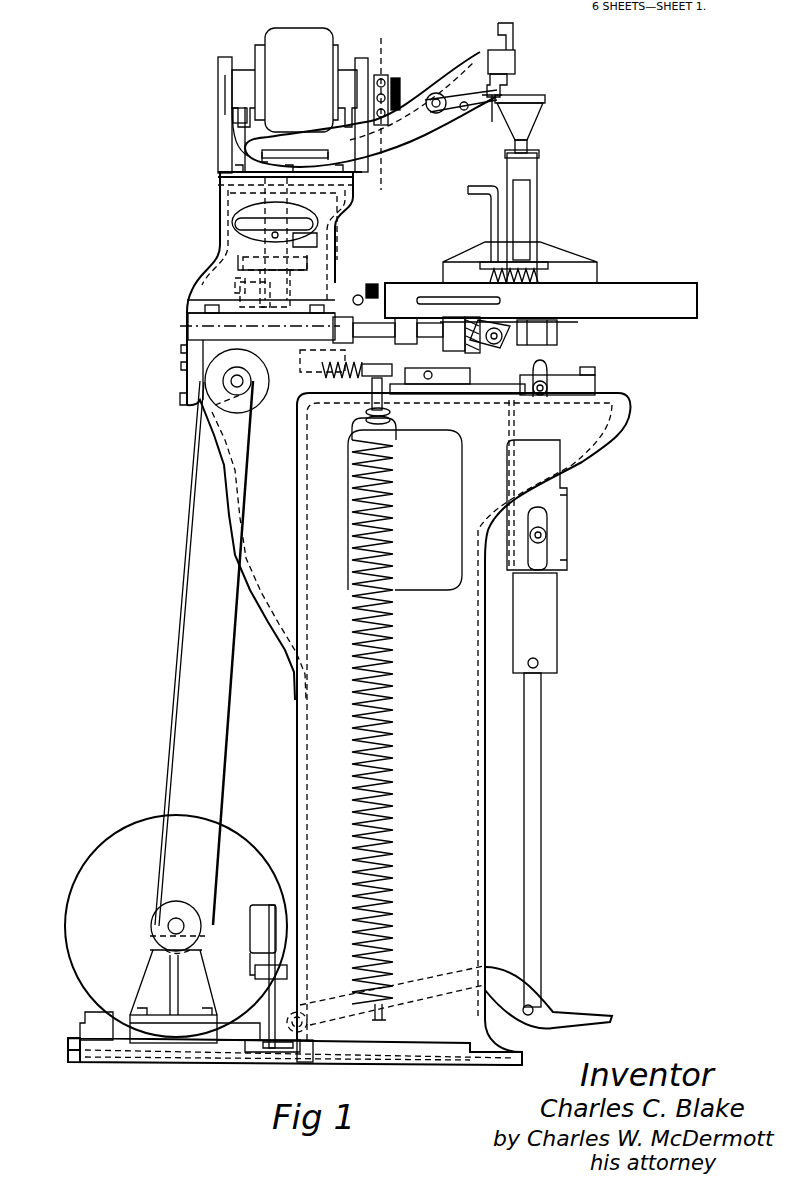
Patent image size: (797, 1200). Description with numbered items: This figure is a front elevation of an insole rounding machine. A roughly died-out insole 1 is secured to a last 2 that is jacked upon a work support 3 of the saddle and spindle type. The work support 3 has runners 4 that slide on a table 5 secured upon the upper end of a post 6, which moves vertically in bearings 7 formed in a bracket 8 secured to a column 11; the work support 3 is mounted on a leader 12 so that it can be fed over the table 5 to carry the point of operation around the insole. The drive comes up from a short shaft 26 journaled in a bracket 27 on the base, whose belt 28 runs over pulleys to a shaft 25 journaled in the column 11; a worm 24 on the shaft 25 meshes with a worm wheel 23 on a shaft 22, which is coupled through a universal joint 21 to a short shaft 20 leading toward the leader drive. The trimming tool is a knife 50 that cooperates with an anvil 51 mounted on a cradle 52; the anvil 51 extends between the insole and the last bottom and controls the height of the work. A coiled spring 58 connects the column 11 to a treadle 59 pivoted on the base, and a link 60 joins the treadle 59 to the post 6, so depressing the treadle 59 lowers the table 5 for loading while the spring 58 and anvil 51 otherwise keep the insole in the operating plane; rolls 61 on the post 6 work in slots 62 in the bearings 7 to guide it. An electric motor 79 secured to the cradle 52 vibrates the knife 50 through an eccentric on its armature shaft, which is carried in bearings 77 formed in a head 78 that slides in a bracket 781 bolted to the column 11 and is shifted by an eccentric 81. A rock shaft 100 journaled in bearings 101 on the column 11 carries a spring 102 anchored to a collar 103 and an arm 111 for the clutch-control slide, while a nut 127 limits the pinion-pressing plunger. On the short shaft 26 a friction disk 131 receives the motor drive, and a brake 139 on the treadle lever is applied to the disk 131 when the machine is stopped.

The insole 1 is at (530, 99).
The last 2 is at (530, 116).
The work support 3 is at (561, 198).
The runners 4 is at (599, 281).
The table 5 is at (698, 303).
The post 6 is at (558, 333).
The bearings 7 is at (522, 378).
The bracket 8 is at (353, 257).
The column 11 is at (467, 738).
The leader 12 is at (545, 279).
The short shaft 20 is at (352, 292).
The universal joint 21 is at (341, 300).
The shaft 22 is at (188, 326).
The worm wheel 23 is at (240, 293).
The worm 24 is at (215, 405).
The shaft 25 is at (230, 379).
The short shaft 26 is at (168, 924).
The bracket 27 is at (135, 985).
The belt 28 is at (165, 712).
The knife 50 is at (479, 94).
The anvil 51 is at (490, 100).
The cradle 52 is at (410, 138).
The coiled spring 58 is at (395, 510).
The treadle 59 is at (553, 1015).
The link 60 is at (541, 878).
The rolls 61 is at (547, 386).
The slots 62 is at (622, 416).
The bearings 77 is at (218, 68).
The head 78 is at (220, 163).
The electric motor 79 is at (300, 33).
The eccentric 81 is at (220, 181).
The rock shaft 100 is at (378, 378).
The bearings 101 is at (448, 380).
The spring 102 is at (353, 370).
The collar 103 is at (386, 382).
The arm 111 is at (481, 475).
The nut 127 is at (365, 292).
The friction disk 131 is at (92, 856).
The brake 139 is at (256, 905).
The bracket 781 is at (220, 215).